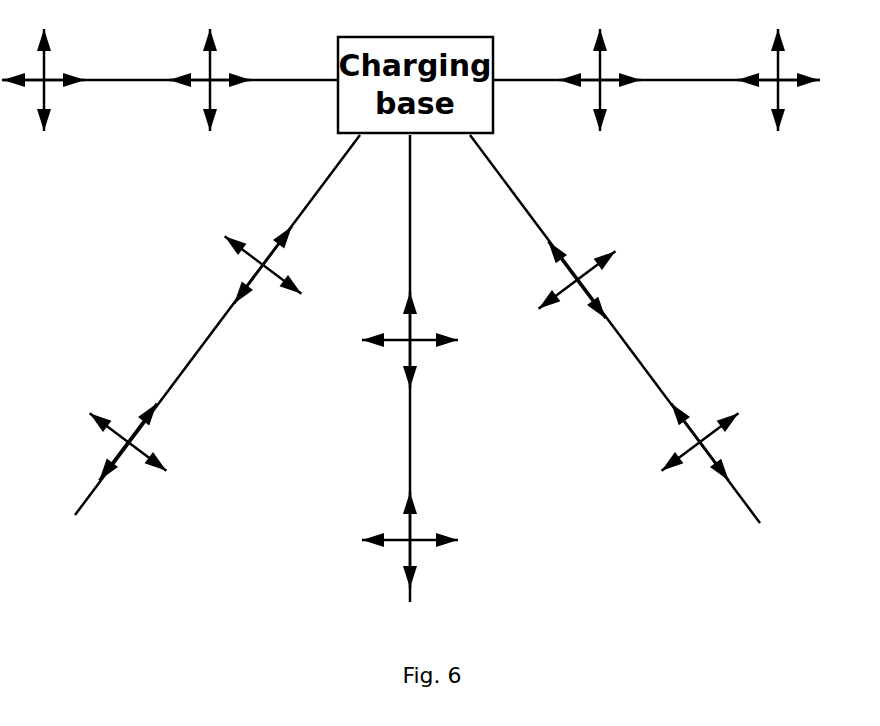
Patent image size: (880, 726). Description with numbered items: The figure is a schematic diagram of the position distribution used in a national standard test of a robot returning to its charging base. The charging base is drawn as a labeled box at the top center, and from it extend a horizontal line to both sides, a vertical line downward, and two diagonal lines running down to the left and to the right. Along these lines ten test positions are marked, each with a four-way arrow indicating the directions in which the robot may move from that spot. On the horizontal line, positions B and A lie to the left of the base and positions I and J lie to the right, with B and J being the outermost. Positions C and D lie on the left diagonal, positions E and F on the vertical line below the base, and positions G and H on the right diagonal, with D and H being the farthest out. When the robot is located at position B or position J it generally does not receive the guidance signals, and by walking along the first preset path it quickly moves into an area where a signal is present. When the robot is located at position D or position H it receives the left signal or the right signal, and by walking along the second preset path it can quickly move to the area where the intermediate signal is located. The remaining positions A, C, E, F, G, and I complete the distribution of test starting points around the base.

The position A is at (219, 80).
The position B is at (55, 80).
The position C is at (263, 265).
The position D is at (128, 442).
The position E is at (412, 331).
The position F is at (411, 534).
The position G is at (577, 280).
The position H is at (700, 442).
The position I is at (600, 92).
The position J is at (778, 92).